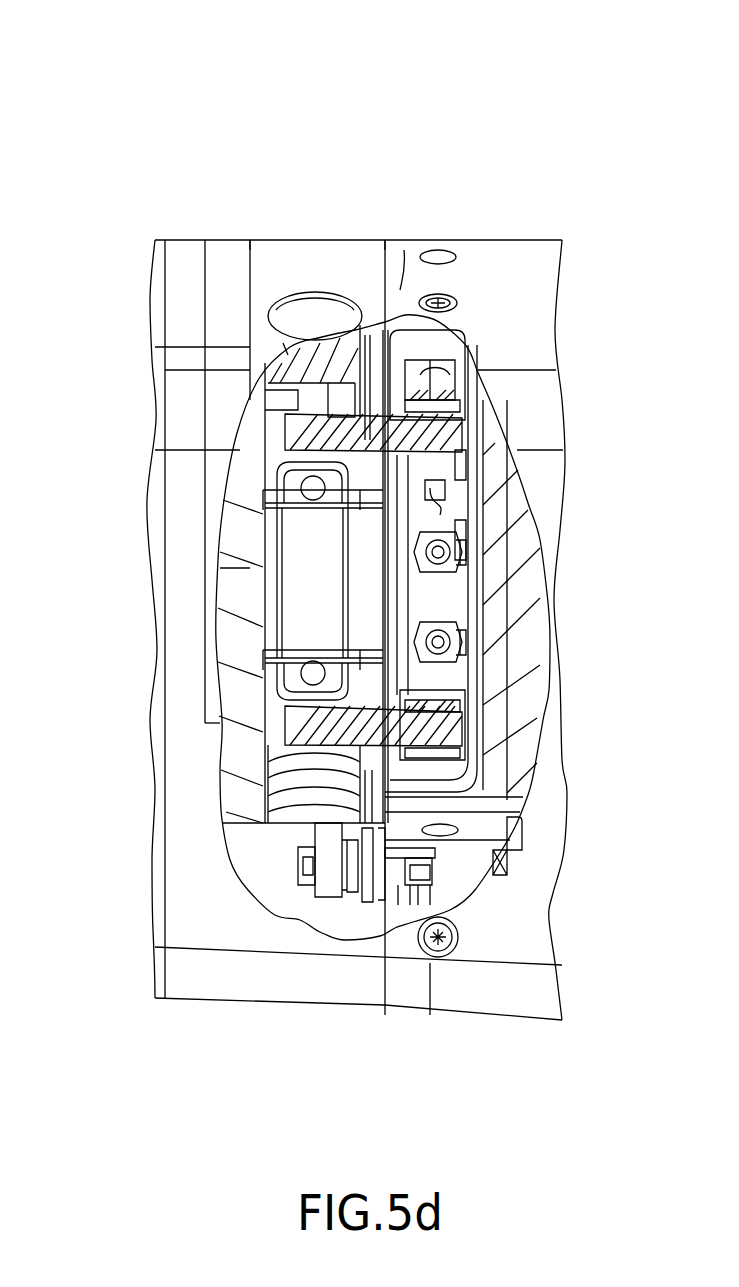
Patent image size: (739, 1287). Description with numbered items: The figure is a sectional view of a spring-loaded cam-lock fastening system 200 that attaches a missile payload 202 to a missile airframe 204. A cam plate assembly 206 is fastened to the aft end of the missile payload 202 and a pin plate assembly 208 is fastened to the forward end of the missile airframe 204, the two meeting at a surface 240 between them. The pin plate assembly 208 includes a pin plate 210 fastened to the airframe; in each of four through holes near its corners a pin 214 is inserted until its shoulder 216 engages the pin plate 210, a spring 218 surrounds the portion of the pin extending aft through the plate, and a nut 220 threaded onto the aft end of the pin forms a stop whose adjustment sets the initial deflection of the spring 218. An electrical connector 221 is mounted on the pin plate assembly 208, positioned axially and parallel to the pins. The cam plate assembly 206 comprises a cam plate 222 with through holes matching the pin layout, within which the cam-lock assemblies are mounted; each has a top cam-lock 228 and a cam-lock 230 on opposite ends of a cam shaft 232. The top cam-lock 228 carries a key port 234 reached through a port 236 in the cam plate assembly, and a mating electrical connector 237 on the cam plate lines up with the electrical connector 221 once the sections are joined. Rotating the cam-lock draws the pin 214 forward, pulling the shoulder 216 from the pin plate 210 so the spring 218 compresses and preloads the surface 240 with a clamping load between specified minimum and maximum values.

The spring-loaded cam-lock fastening system 200 is at (505, 115).
The missile payload 202 is at (188, 240).
The missile airframe 204 is at (533, 240).
The cam plate assembly 206 is at (359, 232).
The pin plate assembly 208 is at (495, 597).
The pin plate 210 is at (466, 348).
The pin 214 is at (455, 428).
The shoulder 216 is at (371, 420).
The spring 218 is at (437, 505).
The nut 220 is at (440, 462).
The electrical connector 221 is at (450, 868).
The cam plate 222 is at (285, 242).
The top cam-lock 228 is at (280, 397).
The cam-lock 230 is at (258, 762).
The cam shaft 232 is at (272, 586).
The key port 234 is at (305, 370).
The port 236 is at (275, 297).
The mating electrical connector 237 is at (303, 896).
The surface 240 is at (404, 250).